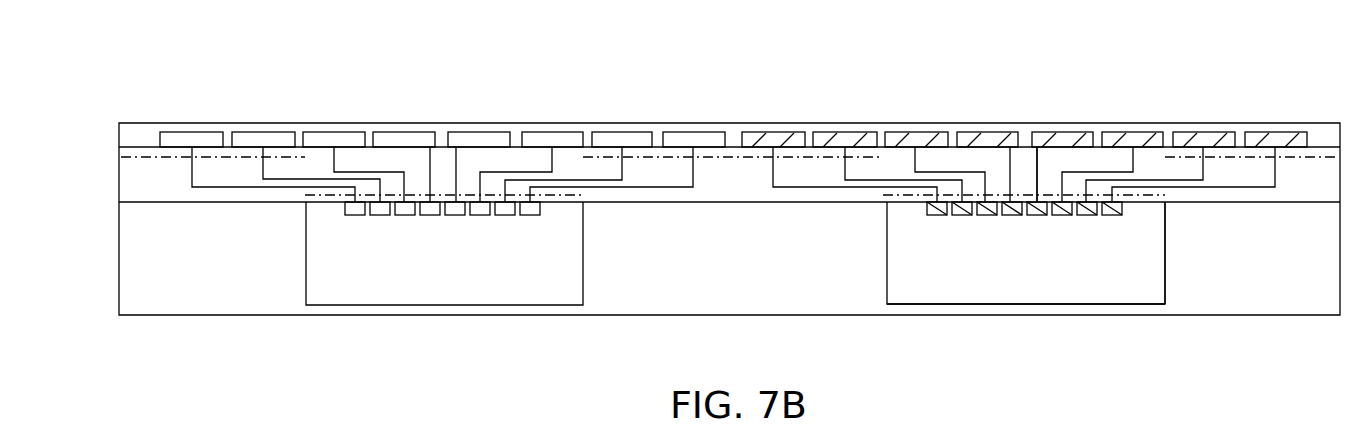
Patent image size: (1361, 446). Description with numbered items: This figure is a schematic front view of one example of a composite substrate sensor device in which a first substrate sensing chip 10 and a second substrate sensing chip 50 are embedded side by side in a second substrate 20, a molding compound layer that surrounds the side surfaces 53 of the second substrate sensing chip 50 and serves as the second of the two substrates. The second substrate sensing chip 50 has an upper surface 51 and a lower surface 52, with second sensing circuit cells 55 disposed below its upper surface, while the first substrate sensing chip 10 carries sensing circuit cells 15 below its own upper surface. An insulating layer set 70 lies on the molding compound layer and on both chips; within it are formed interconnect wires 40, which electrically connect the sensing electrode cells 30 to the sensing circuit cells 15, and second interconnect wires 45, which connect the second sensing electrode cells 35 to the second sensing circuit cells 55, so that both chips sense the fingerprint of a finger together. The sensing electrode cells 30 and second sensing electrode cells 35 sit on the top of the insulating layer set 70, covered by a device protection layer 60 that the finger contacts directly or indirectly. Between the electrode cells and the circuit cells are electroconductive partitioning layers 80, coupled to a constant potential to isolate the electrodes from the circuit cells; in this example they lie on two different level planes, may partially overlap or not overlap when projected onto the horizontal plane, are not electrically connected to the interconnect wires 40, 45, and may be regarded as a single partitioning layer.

The first substrate sensing chip 10 is at (573, 265).
The sensing circuit cells 15 is at (355, 215).
The second substrate (molding compound layer) 20 is at (125, 260).
The sensing electrode cells 30 is at (193, 140).
The second sensing electrode cells 35 is at (778, 137).
The interconnect wires 40 is at (237, 187).
The second interconnect wires 45 is at (798, 187).
The second substrate sensing chip 50 is at (1152, 265).
The upper surface 51 is at (1050, 172).
The lower surface 52 is at (1040, 304).
The side surfaces 53 is at (1165, 235).
The second sensing circuit cells 55 is at (932, 215).
The device protection layer 60 is at (132, 128).
The insulating layer set 70 is at (125, 178).
The electroconductive partitioning layers 80 is at (242, 157).